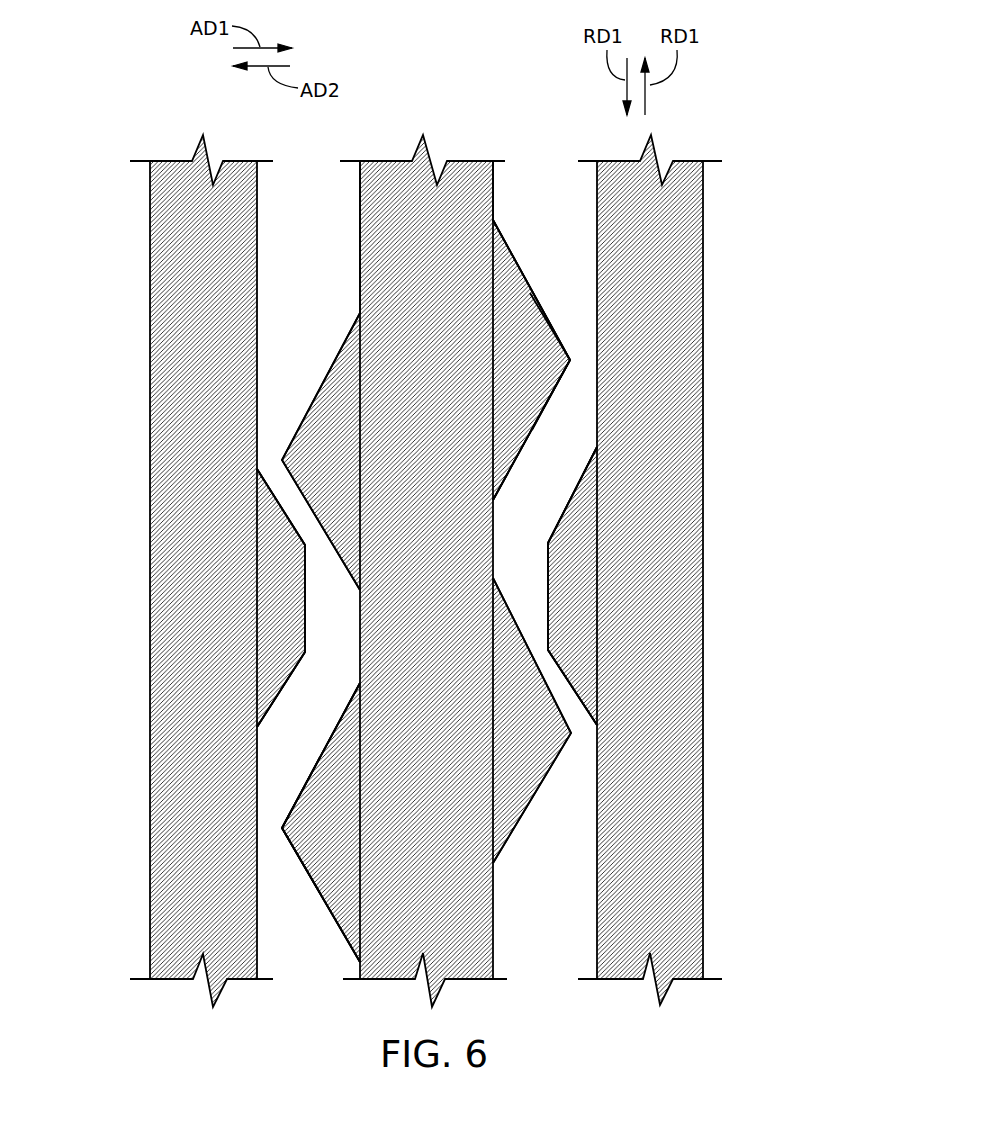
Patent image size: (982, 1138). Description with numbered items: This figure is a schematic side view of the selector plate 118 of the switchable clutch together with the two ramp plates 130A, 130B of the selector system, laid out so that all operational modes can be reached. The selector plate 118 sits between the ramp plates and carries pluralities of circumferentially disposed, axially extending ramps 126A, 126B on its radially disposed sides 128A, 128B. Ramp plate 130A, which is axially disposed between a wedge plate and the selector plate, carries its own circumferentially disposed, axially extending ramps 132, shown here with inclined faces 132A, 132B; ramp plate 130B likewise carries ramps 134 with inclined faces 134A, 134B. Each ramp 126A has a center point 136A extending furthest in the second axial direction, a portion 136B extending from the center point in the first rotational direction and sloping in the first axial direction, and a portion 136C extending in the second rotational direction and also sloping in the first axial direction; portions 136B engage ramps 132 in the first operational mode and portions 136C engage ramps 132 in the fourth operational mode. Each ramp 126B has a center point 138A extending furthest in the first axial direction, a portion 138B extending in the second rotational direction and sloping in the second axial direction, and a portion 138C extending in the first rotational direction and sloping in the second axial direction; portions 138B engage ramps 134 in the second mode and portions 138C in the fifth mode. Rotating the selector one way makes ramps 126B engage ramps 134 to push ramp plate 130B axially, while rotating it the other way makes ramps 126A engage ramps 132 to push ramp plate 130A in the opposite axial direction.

The selector plate 118 is at (400, 140).
The ramp plate 130A is at (175, 135).
The ramp plate 130B is at (683, 142).
The ramps 126A is at (320, 425).
The ramps 126B is at (540, 760).
The radially disposed side 128A is at (359, 200).
The radially disposed side 128B is at (493, 187).
The ramps 132 is at (272, 607).
The upper inclined surface of protrusion 132 132A is at (298, 527).
The lower inclined surface of protrusion 132 132B is at (283, 695).
The ramps 134 is at (580, 598).
The upper inclined surface of protrusion 134 134A is at (572, 505).
The lower inclined surface of protrusion 134 134B is at (570, 683).
The center point 136A is at (280, 828).
The portion 136B is at (330, 908).
The portion 136C is at (310, 783).
The center point 138A is at (570, 363).
The portion 138B is at (540, 287).
The portion 138C is at (543, 410).